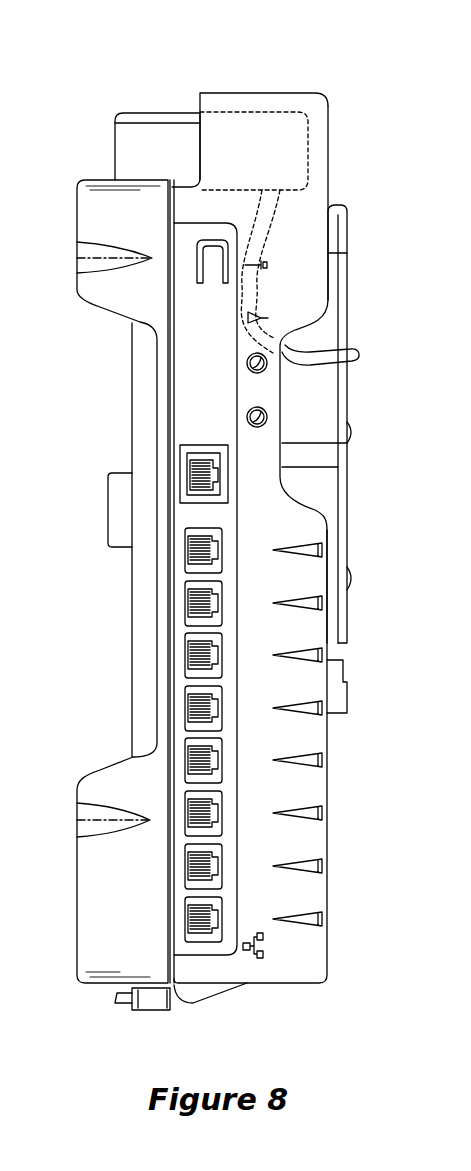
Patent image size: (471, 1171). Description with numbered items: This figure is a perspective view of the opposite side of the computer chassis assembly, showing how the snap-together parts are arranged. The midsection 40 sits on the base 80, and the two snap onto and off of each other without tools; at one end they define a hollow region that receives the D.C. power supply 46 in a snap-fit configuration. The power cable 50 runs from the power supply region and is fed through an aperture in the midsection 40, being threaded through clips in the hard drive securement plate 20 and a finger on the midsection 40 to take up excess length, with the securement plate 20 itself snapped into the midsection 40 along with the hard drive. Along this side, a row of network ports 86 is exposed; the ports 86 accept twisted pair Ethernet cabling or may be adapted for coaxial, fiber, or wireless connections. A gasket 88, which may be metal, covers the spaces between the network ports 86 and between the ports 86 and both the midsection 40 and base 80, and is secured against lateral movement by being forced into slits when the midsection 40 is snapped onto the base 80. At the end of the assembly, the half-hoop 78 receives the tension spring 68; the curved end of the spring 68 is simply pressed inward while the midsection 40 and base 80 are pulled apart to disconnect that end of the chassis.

The hard drive securement plate 20 is at (346, 283).
The midsection 40 is at (269, 93).
The D.C. power supply 46 is at (157, 113).
The power cable 50 is at (332, 330).
The tension spring 68 is at (117, 998).
The half-hoop 78 is at (150, 1002).
The base 80 is at (62, 185).
The network ports 86 is at (185, 550).
The gasket 88 is at (190, 368).